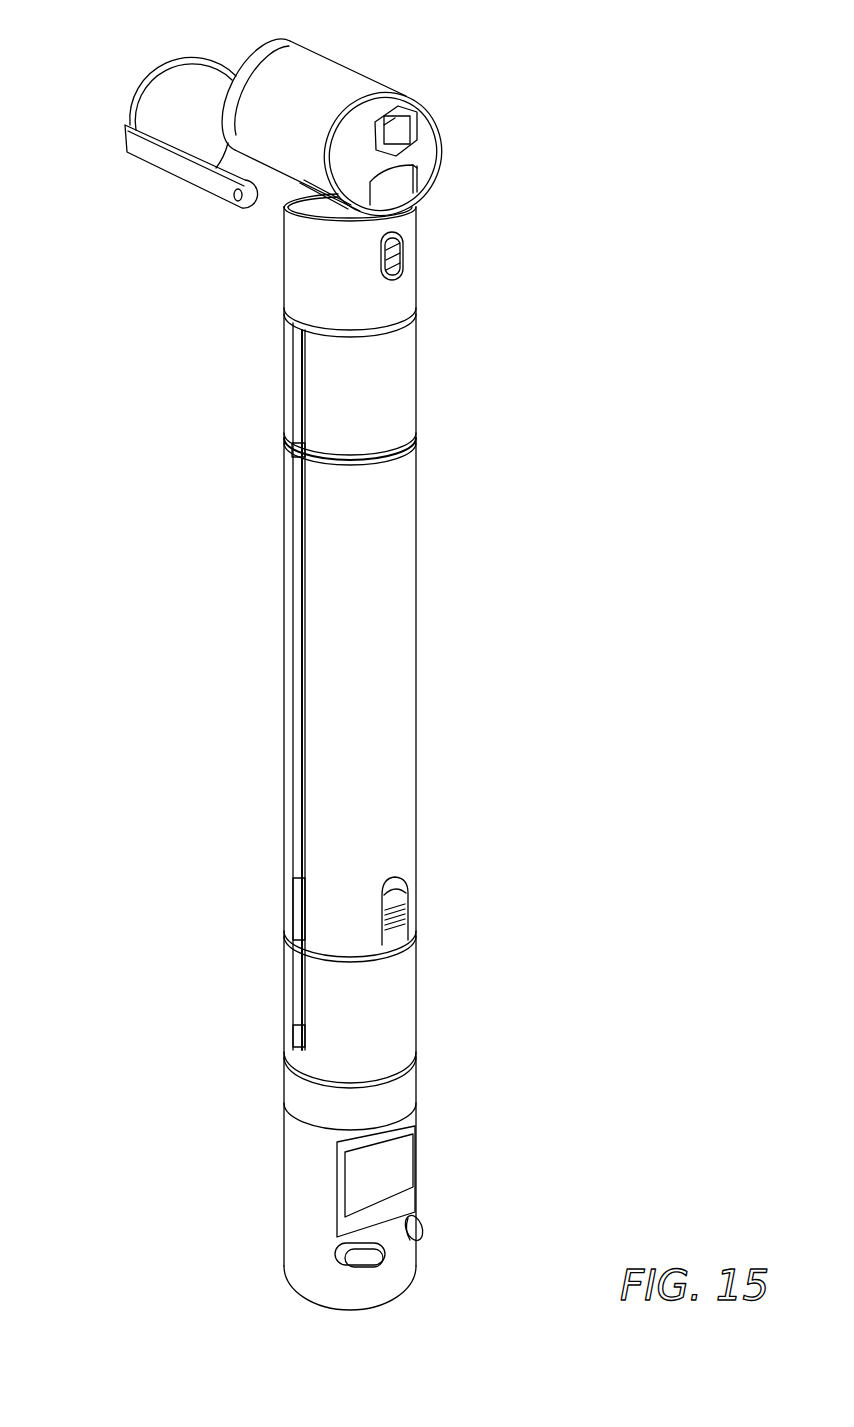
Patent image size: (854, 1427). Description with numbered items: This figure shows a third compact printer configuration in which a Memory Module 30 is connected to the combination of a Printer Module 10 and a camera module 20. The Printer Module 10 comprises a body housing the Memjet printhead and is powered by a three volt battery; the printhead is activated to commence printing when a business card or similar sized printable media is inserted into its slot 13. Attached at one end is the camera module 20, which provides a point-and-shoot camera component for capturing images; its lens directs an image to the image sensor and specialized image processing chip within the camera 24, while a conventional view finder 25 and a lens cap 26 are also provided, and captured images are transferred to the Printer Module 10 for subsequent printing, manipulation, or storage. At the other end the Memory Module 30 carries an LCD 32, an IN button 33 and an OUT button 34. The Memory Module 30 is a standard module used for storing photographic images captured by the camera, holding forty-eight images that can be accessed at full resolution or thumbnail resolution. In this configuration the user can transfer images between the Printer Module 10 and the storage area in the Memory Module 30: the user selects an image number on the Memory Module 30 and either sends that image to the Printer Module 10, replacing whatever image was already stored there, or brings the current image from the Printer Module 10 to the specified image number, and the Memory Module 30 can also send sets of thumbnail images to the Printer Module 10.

The printer module 10 is at (416, 602).
The slot 13 is at (293, 758).
The camera module 20 is at (284, 288).
The camera 24 is at (400, 87).
The view finder 25 is at (403, 137).
The lens cap 26 is at (137, 118).
The memory module 30 is at (285, 1168).
The LCD 32 is at (385, 1163).
The IN button 33 is at (363, 1261).
The OUT button 34 is at (410, 1236).